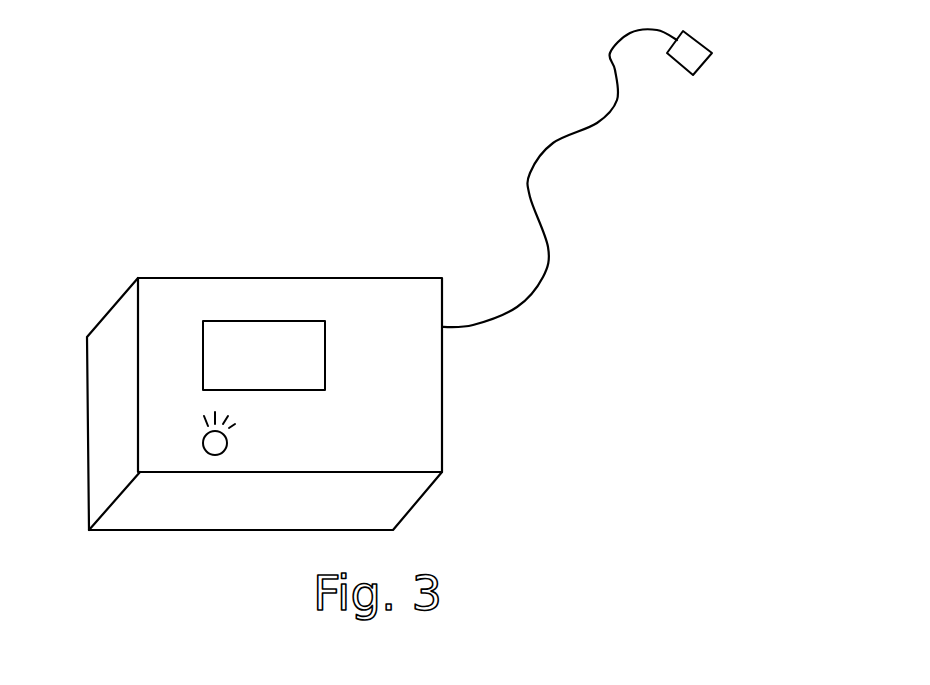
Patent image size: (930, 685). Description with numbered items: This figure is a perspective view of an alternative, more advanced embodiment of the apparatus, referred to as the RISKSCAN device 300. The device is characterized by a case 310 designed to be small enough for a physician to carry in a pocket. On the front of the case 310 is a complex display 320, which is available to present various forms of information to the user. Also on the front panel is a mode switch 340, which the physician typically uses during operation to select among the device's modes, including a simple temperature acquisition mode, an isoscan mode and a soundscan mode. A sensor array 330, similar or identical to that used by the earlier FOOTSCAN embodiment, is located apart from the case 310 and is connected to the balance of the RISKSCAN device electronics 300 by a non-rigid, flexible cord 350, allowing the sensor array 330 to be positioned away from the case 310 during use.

The RISKSCAN device 300 is at (470, 502).
The case 310 is at (297, 277).
The complex display 320 is at (264, 355).
The sensor array 330 is at (697, 33).
The mode switch 340 is at (203, 443).
The cord 350 is at (547, 147).